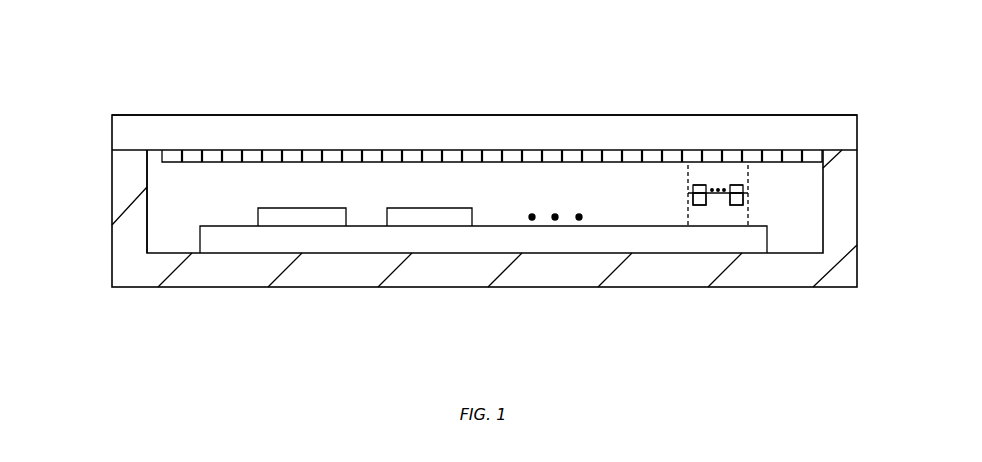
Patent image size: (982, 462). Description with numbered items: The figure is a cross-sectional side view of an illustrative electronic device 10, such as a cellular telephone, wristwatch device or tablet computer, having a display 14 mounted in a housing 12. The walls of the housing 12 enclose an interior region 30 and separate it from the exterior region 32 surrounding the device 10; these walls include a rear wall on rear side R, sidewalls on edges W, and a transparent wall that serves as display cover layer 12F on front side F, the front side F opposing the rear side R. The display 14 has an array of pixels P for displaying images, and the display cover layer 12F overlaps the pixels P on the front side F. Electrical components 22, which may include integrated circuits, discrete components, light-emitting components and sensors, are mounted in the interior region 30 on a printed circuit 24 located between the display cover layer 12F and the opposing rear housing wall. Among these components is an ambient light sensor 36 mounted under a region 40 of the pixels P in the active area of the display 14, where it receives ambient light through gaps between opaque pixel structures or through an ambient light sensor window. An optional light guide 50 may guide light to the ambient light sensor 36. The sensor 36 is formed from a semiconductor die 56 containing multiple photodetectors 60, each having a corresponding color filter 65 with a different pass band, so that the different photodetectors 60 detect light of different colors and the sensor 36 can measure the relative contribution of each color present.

The electronic device 10 is at (877, 114).
The housing 12 is at (292, 288).
The display cover layer 12F is at (137, 122).
The display 14 is at (314, 66).
The electrical components 22 is at (426, 212).
The printed circuit 24 is at (470, 240).
The interior region 30 is at (165, 180).
The exterior region 32 is at (567, 23).
The ambient light sensor 36 is at (670, 210).
The region 40 is at (686, 106).
The light guide 50 is at (748, 181).
The semiconductor die 56 is at (741, 212).
The photodetectors 60 is at (734, 207).
The color filters 65 is at (730, 186).
The front side F is at (219, 86).
The edges W is at (78, 208).
The pixels P is at (497, 163).
The rear side R is at (180, 327).